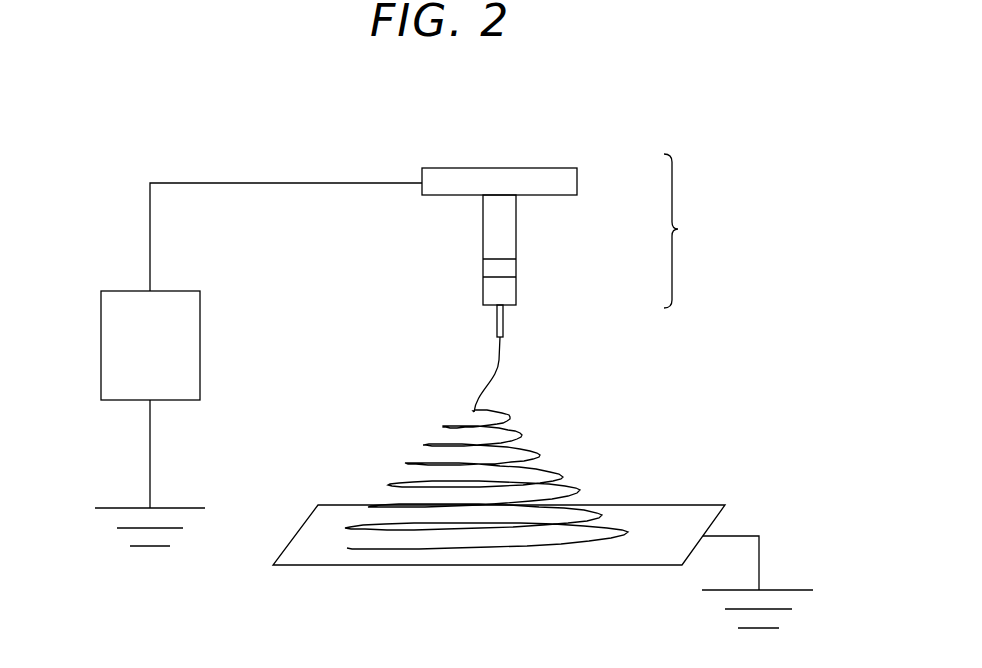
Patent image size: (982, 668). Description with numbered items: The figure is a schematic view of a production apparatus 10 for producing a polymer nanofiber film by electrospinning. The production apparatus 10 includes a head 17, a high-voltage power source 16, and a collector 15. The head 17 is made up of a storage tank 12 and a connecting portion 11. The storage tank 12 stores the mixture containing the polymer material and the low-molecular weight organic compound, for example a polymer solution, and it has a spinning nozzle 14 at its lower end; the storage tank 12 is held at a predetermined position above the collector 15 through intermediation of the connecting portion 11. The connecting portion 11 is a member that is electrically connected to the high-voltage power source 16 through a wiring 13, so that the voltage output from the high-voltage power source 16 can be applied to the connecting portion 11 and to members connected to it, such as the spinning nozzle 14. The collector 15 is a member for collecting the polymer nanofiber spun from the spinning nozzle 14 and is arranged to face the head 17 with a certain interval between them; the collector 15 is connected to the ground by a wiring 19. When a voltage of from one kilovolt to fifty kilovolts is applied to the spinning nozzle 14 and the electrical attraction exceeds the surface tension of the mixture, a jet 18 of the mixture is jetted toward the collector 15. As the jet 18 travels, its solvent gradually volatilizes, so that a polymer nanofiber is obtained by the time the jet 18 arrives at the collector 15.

The production apparatus 10 is at (574, 104).
The connecting portion 11 is at (577, 182).
The storage tank 12 is at (516, 243).
The wiring 13 is at (345, 184).
The spinning nozzle 14 is at (497, 318).
The collector 15 is at (663, 518).
The high-voltage power source 16 is at (200, 343).
The head 17 is at (686, 231).
The jet 18 is at (502, 350).
The wiring 19 is at (760, 560).